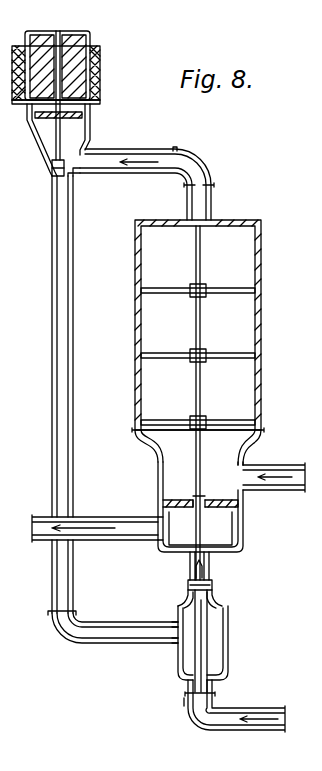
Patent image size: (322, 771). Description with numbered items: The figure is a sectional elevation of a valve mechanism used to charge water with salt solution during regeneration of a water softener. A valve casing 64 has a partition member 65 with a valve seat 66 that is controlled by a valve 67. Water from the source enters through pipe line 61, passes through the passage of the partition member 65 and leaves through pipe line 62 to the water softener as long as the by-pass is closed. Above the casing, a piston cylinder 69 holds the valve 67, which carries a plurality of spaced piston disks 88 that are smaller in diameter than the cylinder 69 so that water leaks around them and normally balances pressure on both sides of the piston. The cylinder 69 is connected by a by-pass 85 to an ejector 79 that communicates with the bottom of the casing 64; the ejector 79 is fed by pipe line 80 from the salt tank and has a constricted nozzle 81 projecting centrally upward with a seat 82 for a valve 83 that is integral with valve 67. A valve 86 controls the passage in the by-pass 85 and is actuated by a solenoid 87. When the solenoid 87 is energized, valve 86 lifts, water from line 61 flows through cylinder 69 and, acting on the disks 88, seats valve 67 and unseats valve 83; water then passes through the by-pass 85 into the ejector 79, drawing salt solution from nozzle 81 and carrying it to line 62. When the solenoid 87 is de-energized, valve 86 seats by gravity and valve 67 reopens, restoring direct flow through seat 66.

The pipe line 61 is at (280, 488).
The pipe line 62 is at (118, 542).
The valve casing 64 is at (244, 528).
The partition member 65 is at (172, 500).
The valve seat 66 is at (200, 528).
The valve 67 is at (213, 567).
The piston cylinder 69 is at (259, 326).
The ejector 79 is at (230, 656).
The pipe line 80 is at (259, 710).
The constricted nozzle 81 is at (208, 626).
The seat 82 is at (224, 603).
The valve 83 is at (213, 588).
The by-pass 85 is at (146, 150).
The valve 86 is at (68, 184).
The solenoid 87 is at (100, 82).
The piston disks 88 is at (246, 290).